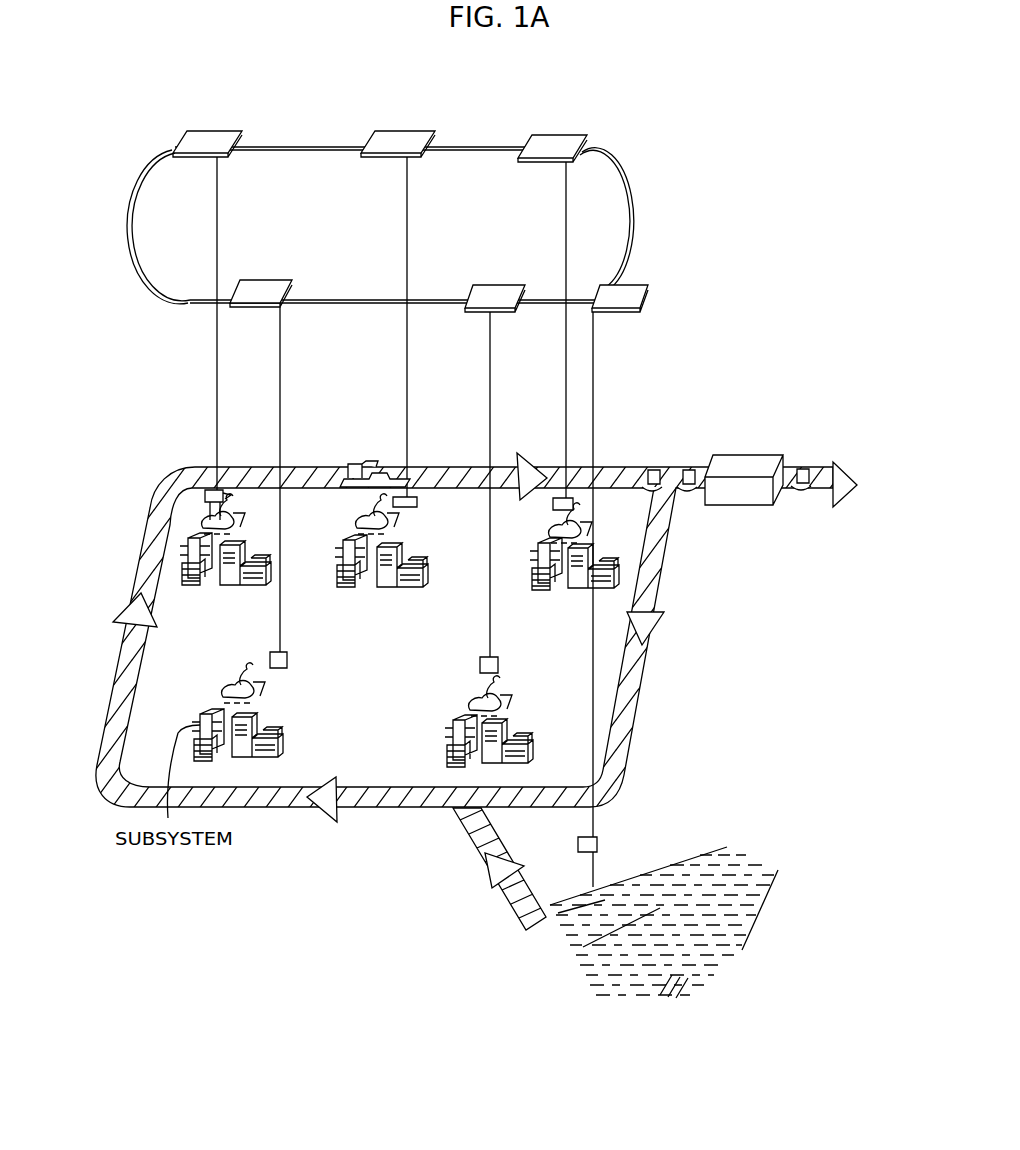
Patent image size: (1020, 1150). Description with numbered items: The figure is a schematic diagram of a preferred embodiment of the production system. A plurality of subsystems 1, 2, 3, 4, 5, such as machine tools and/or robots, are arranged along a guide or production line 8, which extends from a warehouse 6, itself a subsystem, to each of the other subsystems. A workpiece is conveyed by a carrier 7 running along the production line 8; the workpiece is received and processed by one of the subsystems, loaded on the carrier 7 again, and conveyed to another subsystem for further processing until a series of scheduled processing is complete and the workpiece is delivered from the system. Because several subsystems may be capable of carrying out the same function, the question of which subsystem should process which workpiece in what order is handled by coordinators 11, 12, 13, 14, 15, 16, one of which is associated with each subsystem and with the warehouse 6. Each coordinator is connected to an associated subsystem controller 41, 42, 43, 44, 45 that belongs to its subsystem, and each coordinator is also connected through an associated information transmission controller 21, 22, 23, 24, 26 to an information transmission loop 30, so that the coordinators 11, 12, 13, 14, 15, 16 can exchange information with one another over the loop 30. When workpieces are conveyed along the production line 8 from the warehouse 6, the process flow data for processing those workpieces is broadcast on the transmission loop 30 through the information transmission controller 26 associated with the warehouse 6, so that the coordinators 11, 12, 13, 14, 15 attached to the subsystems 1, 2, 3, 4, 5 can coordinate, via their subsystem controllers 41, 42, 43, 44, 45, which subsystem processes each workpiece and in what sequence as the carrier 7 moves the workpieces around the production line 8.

The information transmission loop 30 is at (317, 147).
The information transmission controller 23 is at (210, 137).
The information transmission controller 24 is at (408, 140).
The subsystem 2 is at (557, 143).
The information transmission controller 22 is at (260, 295).
The information transmission controller 21 is at (495, 298).
The information transmission controller 26 is at (633, 295).
The production line 8 is at (278, 807).
The carrier 7 is at (347, 467).
The coordinator 13 is at (205, 496).
The subsystem controller 43 is at (197, 517).
The subsystem controller 44 is at (356, 526).
The subsystem controller 45 is at (582, 531).
The subsystem controller 42 is at (252, 697).
The subsystem controller 41 is at (505, 690).
The coordinator 14 is at (417, 503).
The coordinator 15 is at (553, 508).
The coordinator 12 is at (287, 659).
The coordinator 11 is at (480, 664).
The coordinator 16 is at (578, 845).
The subsystem 3 is at (210, 590).
The subsystem 4 is at (370, 593).
The subsystem 5 is at (562, 597).
The subsystem 1 is at (522, 742).
The warehouse 6 is at (690, 993).